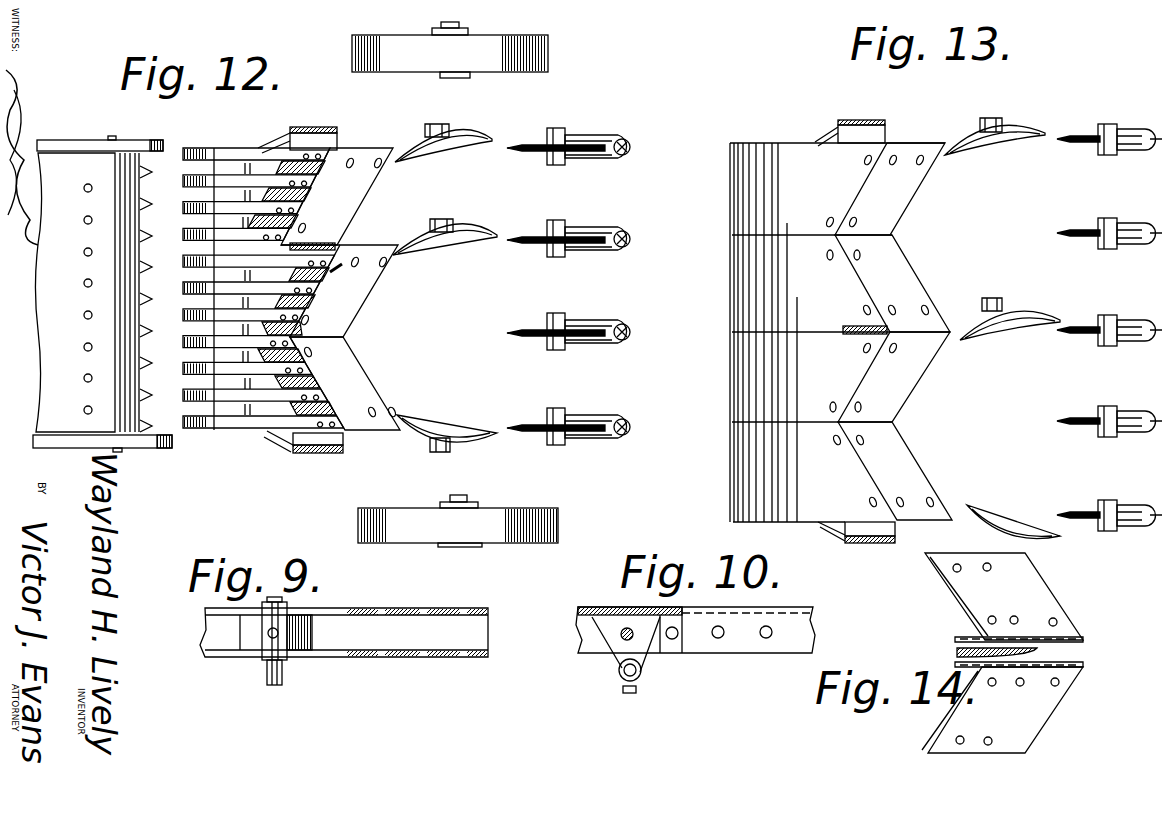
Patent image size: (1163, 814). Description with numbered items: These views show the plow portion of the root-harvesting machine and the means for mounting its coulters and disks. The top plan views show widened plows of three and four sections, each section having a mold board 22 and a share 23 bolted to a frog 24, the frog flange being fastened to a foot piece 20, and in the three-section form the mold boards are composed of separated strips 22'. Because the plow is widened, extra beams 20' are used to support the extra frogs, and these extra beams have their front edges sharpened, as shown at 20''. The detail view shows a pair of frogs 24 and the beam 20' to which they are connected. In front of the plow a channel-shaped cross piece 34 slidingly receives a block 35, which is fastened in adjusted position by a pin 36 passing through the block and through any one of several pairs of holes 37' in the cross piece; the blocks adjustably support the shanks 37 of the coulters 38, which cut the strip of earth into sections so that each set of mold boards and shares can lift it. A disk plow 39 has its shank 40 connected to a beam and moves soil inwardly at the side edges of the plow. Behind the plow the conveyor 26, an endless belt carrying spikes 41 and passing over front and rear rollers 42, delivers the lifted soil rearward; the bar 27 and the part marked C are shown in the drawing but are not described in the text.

In FIG. 12, the foot pieces 20 is at (300, 293).
In FIG. 13, the foot pieces 20 is at (855, 337).
In FIG. 12, the extra beams 20' is at (361, 281).
In FIG. 13, the extra beams 20' is at (828, 360).
In FIG. 14, the extra beams 20' is at (989, 695).
In FIG. 13, the sharpened front edges 20'' is at (924, 355).
In FIG. 14, the sharpened front edges 20'' is at (1054, 652).
In FIG. 13, the mold board 22 is at (817, 332).
In FIG. 12, the separated strips 22' is at (263, 296).
In FIG. 12, the share 23 is at (358, 192).
In FIG. 13, the share 23 is at (905, 197).
In FIG. 14, the frog 24 is at (1035, 588).
In FIG. 12, the conveyor 26 is at (58, 296).
In FIG. 12, the cross bar 27 is at (528, 30).
In FIG. 9, the cross piece 34 is at (336, 658).
In FIG. 10, the cross piece 34 is at (785, 622).
In FIG. 9, the block 35 is at (300, 630).
In FIG. 10, the block 35 is at (638, 643).
In FIG. 9, the pin 36 is at (287, 606).
In FIG. 10, the pin 36 is at (612, 635).
In FIG. 12, the shank 37 is at (602, 286).
In FIG. 9, the shank 37 is at (259, 677).
In FIG. 10, the shank 37 is at (605, 689).
In FIG. 9, the holes 37' is at (417, 637).
In FIG. 10, the holes 37' is at (727, 678).
In FIG. 12, the coulter 38 is at (530, 184).
In FIG. 13, the coulter 38 is at (1090, 206).
In FIG. 12, the disk plow 39 is at (478, 228).
In FIG. 13, the disk plow 39 is at (1005, 141).
In FIG. 12, the shank 40 is at (450, 128).
In FIG. 13, the shank 40 is at (1003, 121).
In FIG. 12, the spikes 41 is at (140, 243).
In FIG. 12, the front and rear rollers 42 is at (126, 441).
In FIG. 12, the cross bar C is at (63, 147).